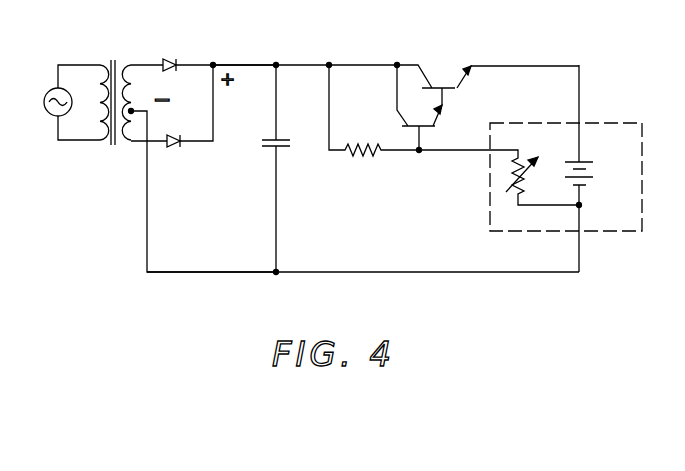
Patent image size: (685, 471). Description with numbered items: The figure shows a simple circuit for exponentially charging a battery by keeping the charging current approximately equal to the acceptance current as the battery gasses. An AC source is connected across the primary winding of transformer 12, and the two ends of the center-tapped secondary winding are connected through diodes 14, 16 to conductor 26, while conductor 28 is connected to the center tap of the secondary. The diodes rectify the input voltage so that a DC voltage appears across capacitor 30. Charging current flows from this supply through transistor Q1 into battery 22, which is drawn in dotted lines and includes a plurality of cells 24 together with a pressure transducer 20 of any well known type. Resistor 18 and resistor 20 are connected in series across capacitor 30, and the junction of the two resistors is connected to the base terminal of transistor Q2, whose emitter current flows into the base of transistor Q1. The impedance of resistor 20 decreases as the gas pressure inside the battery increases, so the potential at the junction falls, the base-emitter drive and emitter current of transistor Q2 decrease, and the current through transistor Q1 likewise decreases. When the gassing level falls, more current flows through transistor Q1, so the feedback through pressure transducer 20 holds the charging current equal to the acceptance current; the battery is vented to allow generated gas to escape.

The transformer 12 is at (118, 58).
The diode 14 is at (170, 58).
The diode 16 is at (173, 148).
The resistor 18 is at (368, 155).
The pressure transducer 20 is at (515, 192).
The battery 22 is at (608, 123).
The cells 24 is at (594, 205).
The conductor 26 is at (232, 62).
The conductor 28 is at (237, 271).
The capacitor 30 is at (262, 144).
The transistor Q1 is at (455, 70).
The transistor Q2 is at (438, 117).